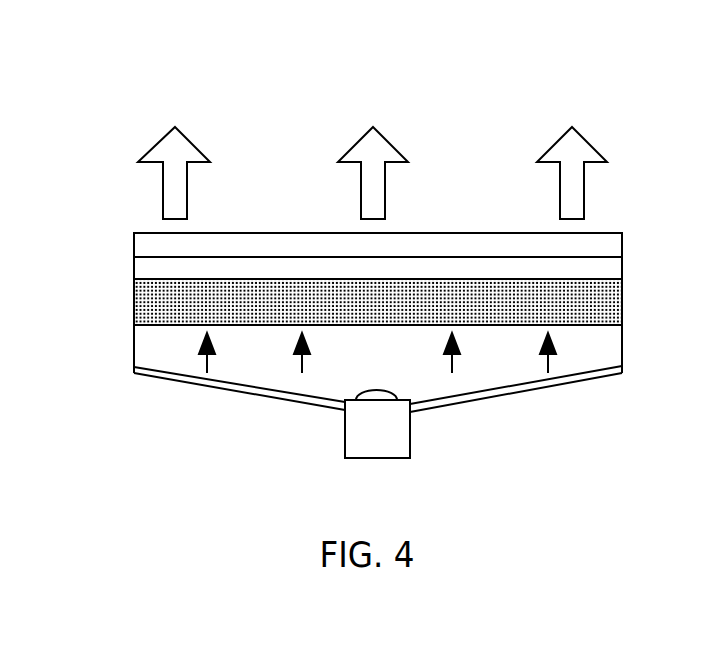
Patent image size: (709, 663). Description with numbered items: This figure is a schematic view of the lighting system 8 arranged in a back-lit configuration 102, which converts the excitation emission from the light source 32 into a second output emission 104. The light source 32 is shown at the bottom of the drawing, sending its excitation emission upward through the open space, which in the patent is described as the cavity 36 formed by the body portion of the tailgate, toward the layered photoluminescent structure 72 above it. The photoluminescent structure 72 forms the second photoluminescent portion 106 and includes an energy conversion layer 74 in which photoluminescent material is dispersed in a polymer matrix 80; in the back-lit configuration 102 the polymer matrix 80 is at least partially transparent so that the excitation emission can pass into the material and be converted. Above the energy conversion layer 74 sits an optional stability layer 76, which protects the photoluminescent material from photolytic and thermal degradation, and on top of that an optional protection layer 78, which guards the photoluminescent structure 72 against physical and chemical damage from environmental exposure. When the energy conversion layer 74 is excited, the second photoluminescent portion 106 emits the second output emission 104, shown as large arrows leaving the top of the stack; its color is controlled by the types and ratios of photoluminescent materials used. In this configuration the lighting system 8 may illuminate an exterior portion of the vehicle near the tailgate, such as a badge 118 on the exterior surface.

The back-lit configuration 102 is at (492, 90).
The lighting system 8 is at (492, 90).
The second output emission 104 is at (167, 192).
The second photoluminescent portion 106 is at (623, 222).
The protection layer 78 is at (142, 243).
The stability layer 76 is at (142, 265).
The polymer matrix 80 is at (140, 303).
The photoluminescent structure 72 is at (630, 297).
The energy conversion layer 74 is at (610, 313).
The badge 118 is at (157, 350).
The cavity 36 is at (207, 365).
The light source 32 is at (366, 438).